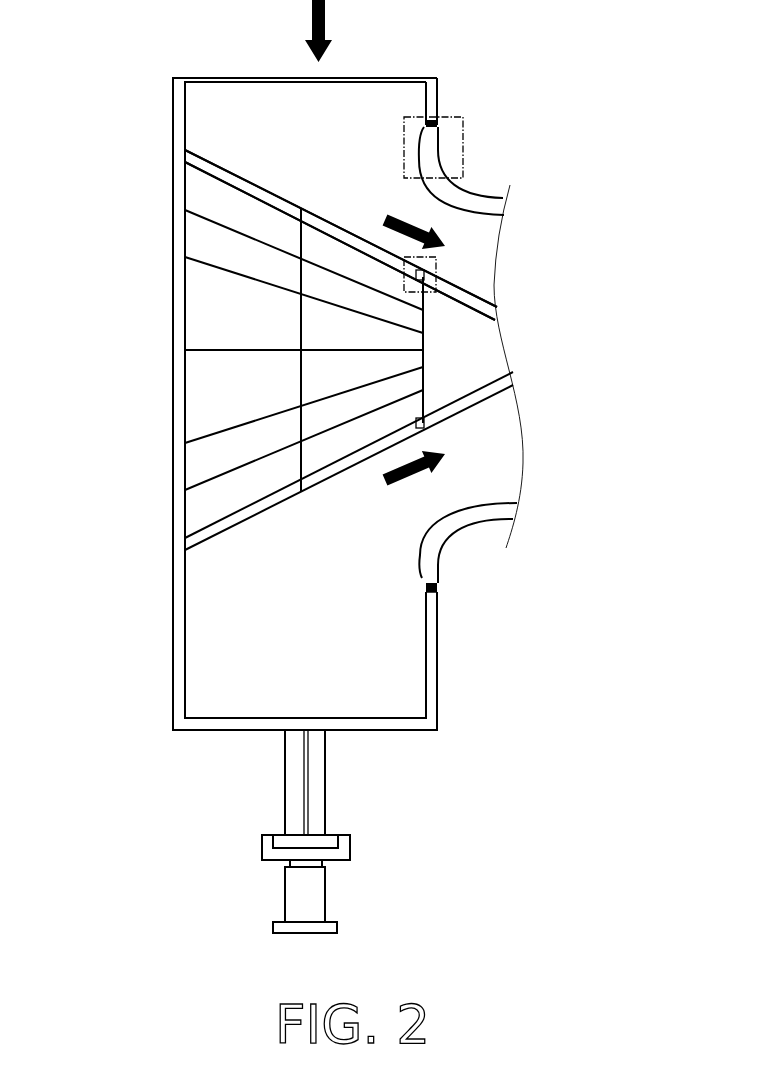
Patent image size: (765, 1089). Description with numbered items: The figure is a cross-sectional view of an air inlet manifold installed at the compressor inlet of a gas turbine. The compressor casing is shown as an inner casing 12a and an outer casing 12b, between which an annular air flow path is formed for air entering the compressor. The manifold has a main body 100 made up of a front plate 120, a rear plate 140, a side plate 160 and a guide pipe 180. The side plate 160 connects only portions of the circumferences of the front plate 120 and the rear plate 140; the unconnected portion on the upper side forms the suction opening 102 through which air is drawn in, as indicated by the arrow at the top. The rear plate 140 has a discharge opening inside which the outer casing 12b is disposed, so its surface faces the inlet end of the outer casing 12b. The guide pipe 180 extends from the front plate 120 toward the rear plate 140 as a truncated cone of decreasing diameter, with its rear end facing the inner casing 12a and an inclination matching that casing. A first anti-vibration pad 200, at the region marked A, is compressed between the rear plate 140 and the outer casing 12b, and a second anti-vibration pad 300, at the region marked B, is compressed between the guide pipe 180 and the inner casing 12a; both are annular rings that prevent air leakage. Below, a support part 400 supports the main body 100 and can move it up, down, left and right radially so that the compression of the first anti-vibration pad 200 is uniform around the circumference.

The main body 100 is at (399, 404).
The suction opening 102 is at (360, 78).
The front plate 120 is at (177, 118).
The rear plate 140 is at (440, 87).
The side plate 160 is at (222, 725).
The guide pipe 180 is at (263, 505).
The inner casing 12a is at (468, 293).
The outer casing 12b is at (473, 203).
The first anti-vibration pad 200 is at (438, 127).
The second anti-vibration pad 300 is at (423, 423).
The support part 400 is at (395, 831).
The detail region A is at (404, 150).
The detail region B is at (437, 265).